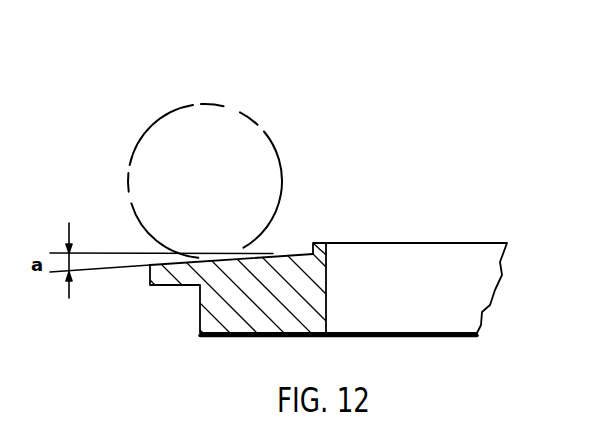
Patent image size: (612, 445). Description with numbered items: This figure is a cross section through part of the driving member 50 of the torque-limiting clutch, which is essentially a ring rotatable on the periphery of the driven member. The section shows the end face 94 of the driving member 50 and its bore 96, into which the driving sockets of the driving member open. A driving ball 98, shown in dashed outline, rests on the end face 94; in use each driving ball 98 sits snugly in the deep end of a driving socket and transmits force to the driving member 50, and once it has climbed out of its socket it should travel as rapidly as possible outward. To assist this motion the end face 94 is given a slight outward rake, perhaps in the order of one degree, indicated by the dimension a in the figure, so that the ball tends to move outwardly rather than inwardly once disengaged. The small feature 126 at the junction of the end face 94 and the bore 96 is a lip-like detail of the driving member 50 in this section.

The driving member 50 is at (293, 304).
The end face 94 is at (292, 257).
The bore 96 is at (450, 258).
The driving ball 98 is at (240, 140).
The shoulder 126 is at (318, 243).